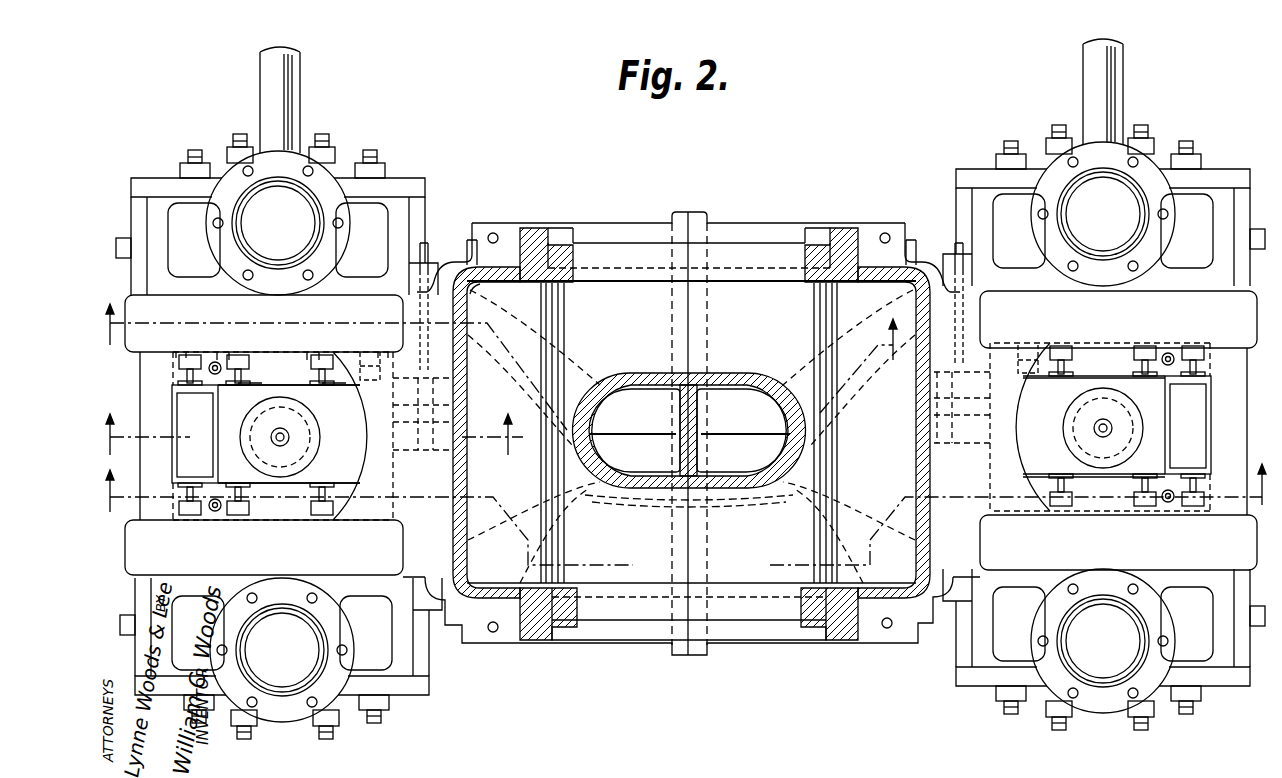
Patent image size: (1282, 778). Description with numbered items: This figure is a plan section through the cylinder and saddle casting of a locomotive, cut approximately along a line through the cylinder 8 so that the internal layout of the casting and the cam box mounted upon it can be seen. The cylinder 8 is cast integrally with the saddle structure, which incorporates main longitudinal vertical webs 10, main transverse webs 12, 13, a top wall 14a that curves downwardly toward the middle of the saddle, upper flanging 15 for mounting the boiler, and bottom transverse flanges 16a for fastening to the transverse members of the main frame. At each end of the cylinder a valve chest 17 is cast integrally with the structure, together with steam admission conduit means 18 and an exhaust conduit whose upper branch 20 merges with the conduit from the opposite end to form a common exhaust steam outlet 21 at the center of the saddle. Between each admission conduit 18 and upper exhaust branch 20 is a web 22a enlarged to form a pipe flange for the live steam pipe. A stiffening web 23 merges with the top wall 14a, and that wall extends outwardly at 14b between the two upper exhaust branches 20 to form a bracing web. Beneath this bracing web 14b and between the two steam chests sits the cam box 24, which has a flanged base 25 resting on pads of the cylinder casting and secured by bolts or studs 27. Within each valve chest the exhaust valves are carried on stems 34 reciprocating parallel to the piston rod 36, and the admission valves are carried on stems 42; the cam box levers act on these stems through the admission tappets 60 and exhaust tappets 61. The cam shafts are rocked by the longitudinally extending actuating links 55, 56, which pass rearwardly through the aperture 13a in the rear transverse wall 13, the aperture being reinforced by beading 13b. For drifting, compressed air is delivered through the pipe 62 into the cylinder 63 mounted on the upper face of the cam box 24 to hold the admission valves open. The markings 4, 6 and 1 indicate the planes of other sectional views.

The piston rod 36 is at (300, 80).
The steam admission conduit means 18 is at (1084, 641).
The web enlarged to form a pipe flange 22a is at (690, 432).
The valve chest 17 is at (690, 432).
The upper branch of exhaust conduit 20 is at (691, 433).
The cylinder 8 is at (1258, 370).
The outwardly extending portion of top wall 14b is at (1023, 394).
The cam box 24 is at (691, 430).
The flanged base 25 is at (691, 431).
The bolts or studs 27 is at (1168, 503).
The pipe 62 is at (1109, 428).
The cylinder 63 is at (1128, 448).
The valve tappet 60 is at (320, 384).
The tappet 61 is at (392, 376).
The stem 42 is at (313, 352).
The stem 34 is at (384, 352).
The actuating link 55 is at (958, 242).
The actuating link 56 is at (910, 240).
The reinforcing beading 13b is at (485, 607).
The aperture 13a is at (494, 286).
The main transverse web 13 is at (630, 265).
The upper flanging 15 is at (832, 640).
The bottom transverse flanges 16a is at (893, 643).
The main transverse web 12 is at (643, 597).
The top wall 14a is at (689, 433).
The main longitudinal vertical webs 10 is at (708, 322).
The common exhaust steam outlet 21 is at (688, 440).
The stiffening web 23 is at (930, 470).
The section line 4- 4 is at (496, 367).
The section line 6- 6 is at (443, 437).
The section line 1- 1 is at (682, 514).